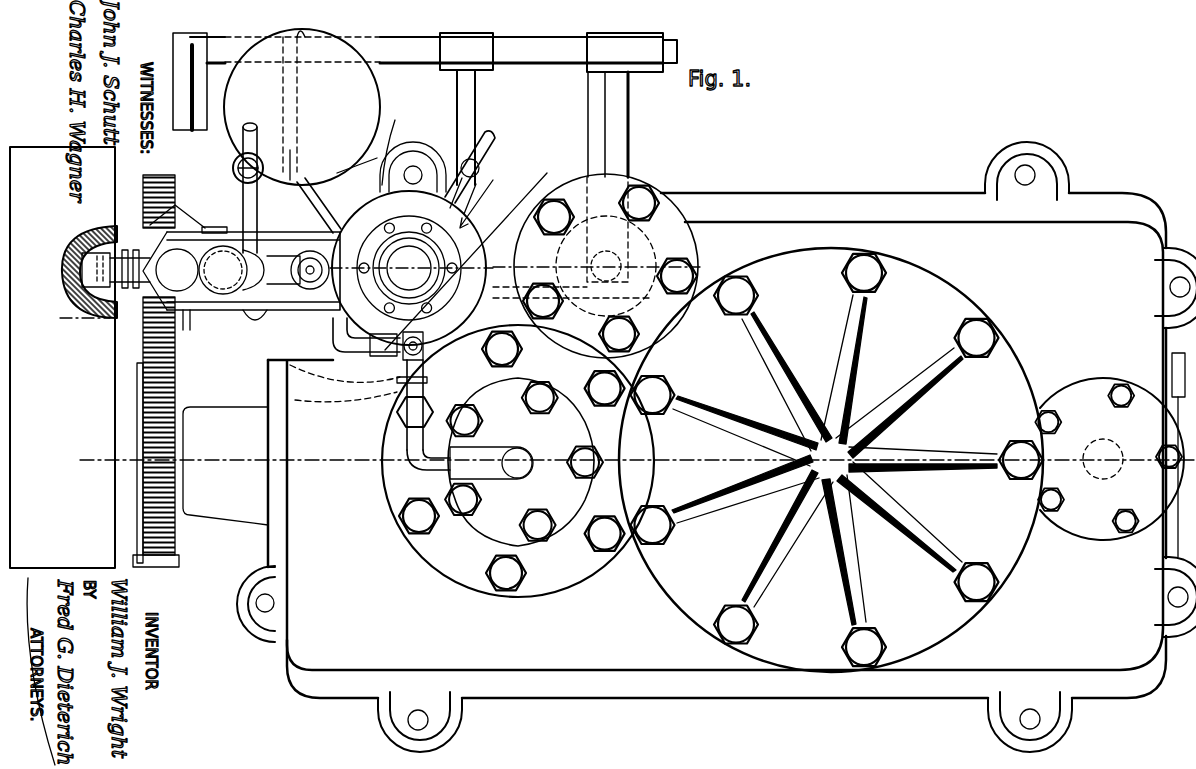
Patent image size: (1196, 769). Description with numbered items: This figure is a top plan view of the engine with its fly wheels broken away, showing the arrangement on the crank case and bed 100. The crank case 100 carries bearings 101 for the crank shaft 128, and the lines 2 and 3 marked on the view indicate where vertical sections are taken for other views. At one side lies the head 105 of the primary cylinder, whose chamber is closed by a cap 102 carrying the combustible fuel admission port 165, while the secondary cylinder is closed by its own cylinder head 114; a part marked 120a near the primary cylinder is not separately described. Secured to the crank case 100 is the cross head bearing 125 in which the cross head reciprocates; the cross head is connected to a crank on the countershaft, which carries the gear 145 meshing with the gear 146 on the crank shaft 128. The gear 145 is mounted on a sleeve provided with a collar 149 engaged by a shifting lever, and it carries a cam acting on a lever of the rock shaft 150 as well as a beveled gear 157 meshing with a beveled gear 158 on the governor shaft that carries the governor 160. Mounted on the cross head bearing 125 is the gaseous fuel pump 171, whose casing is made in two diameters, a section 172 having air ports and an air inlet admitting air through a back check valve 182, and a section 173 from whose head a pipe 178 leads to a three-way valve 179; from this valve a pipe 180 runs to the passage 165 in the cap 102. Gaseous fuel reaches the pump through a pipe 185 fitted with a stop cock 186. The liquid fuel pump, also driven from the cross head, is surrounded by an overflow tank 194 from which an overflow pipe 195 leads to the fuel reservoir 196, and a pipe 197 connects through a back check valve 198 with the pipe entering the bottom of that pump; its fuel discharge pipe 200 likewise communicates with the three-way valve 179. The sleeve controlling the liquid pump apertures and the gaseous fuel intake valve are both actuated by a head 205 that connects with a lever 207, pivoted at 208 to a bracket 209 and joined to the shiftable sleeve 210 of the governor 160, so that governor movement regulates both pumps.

The crank case and bed 100 is at (716, 447).
The bearings 101 is at (225, 466).
The cap 102 is at (524, 462).
The head 105 is at (518, 461).
The cylinder head 114 is at (831, 460).
The pipe 120a is at (600, 118).
The cross head bearing 125 is at (389, 228).
The crank shaft 128 is at (132, 478).
The gear 145 is at (171, 188).
The gear 146 is at (176, 390).
The collar 149 is at (92, 238).
The rock shaft 150 is at (556, 52).
The beveled gear 157 is at (245, 250).
The beveled gear 158 is at (225, 328).
The governor 160 is at (170, 292).
The combustible fuel admission port 165 is at (460, 473).
The gaseous fuel pump 171 is at (434, 281).
The casing section 172 is at (495, 199).
The casing section 173 is at (412, 220).
The pipe 178 is at (420, 352).
The three-way valve 179 is at (397, 408).
The pipe 180 is at (407, 437).
The back check valve 182 is at (478, 178).
The pipe 185 is at (248, 165).
The stop cock 186 is at (237, 153).
The overflow tank 194 is at (210, 220).
The overflow pipe 195 is at (296, 165).
The fuel reservoir 196 is at (302, 107).
The pipe 197 is at (347, 148).
The back check valve 198 is at (400, 143).
The fuel discharge pipe 200 is at (333, 337).
The head 205 is at (306, 175).
The lever 207 is at (180, 298).
The pivot 208 is at (68, 274).
The bracket 209 is at (73, 245).
The shiftable sleeve 210 is at (180, 310).
The section line 2— 2 is at (625, 459).
The section line 3— 3 is at (378, 266).